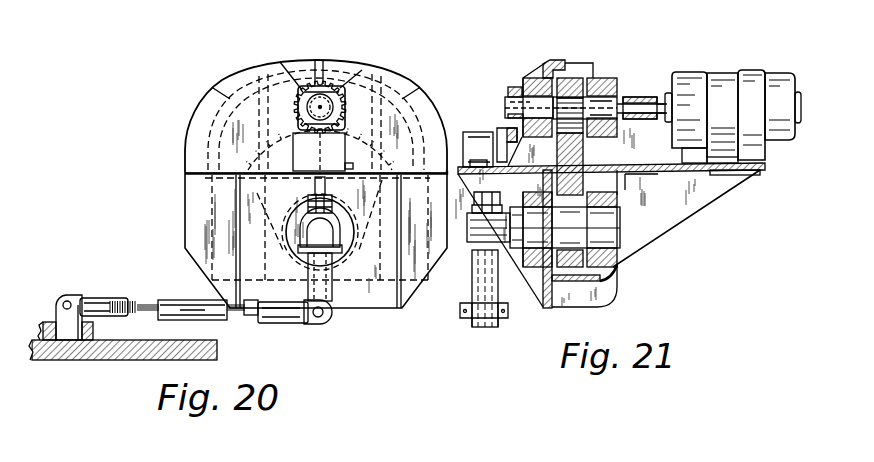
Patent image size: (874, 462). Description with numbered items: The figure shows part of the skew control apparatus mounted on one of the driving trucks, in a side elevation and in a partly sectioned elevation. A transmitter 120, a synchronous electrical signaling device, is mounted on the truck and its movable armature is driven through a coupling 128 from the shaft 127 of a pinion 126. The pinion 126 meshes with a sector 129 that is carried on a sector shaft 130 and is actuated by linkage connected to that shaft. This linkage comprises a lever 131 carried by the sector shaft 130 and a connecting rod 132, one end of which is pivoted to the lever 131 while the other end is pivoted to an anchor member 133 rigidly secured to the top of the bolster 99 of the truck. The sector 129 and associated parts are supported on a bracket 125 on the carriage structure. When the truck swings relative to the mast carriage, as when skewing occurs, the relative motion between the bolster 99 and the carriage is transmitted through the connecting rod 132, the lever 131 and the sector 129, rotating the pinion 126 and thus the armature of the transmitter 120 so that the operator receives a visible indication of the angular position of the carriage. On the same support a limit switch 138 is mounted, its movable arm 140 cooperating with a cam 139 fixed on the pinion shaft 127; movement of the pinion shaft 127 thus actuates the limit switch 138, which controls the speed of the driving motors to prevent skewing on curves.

In FIG. 20, the bolster 99 is at (90, 356).
In FIG. 21, the transmitter 120 is at (687, 78).
In FIG. 21, the bracket 125 is at (710, 194).
In FIG. 20, the pinion 126 is at (360, 76).
In FIG. 21, the pinion 126 is at (568, 80).
In FIG. 20, the shaft 127 is at (318, 105).
In FIG. 21, the shaft 127 is at (607, 107).
In FIG. 21, the coupling 128 is at (645, 100).
In FIG. 20, the sector 129 is at (258, 198).
In FIG. 21, the sector 129 is at (583, 154).
In FIG. 20, the sector shaft 130 is at (308, 233).
In FIG. 21, the sector shaft 130 is at (613, 222).
In FIG. 20, the lever 131 is at (333, 297).
In FIG. 21, the lever 131 is at (473, 285).
In FIG. 20, the connecting rod 132 is at (176, 303).
In FIG. 20, the anchor member 133 is at (62, 322).
In FIG. 21, the limit switch 138 is at (477, 140).
In FIG. 20, the cam 139 is at (300, 98).
In FIG. 21, the cam 139 is at (508, 96).
In FIG. 21, the movable arm 140 is at (496, 130).